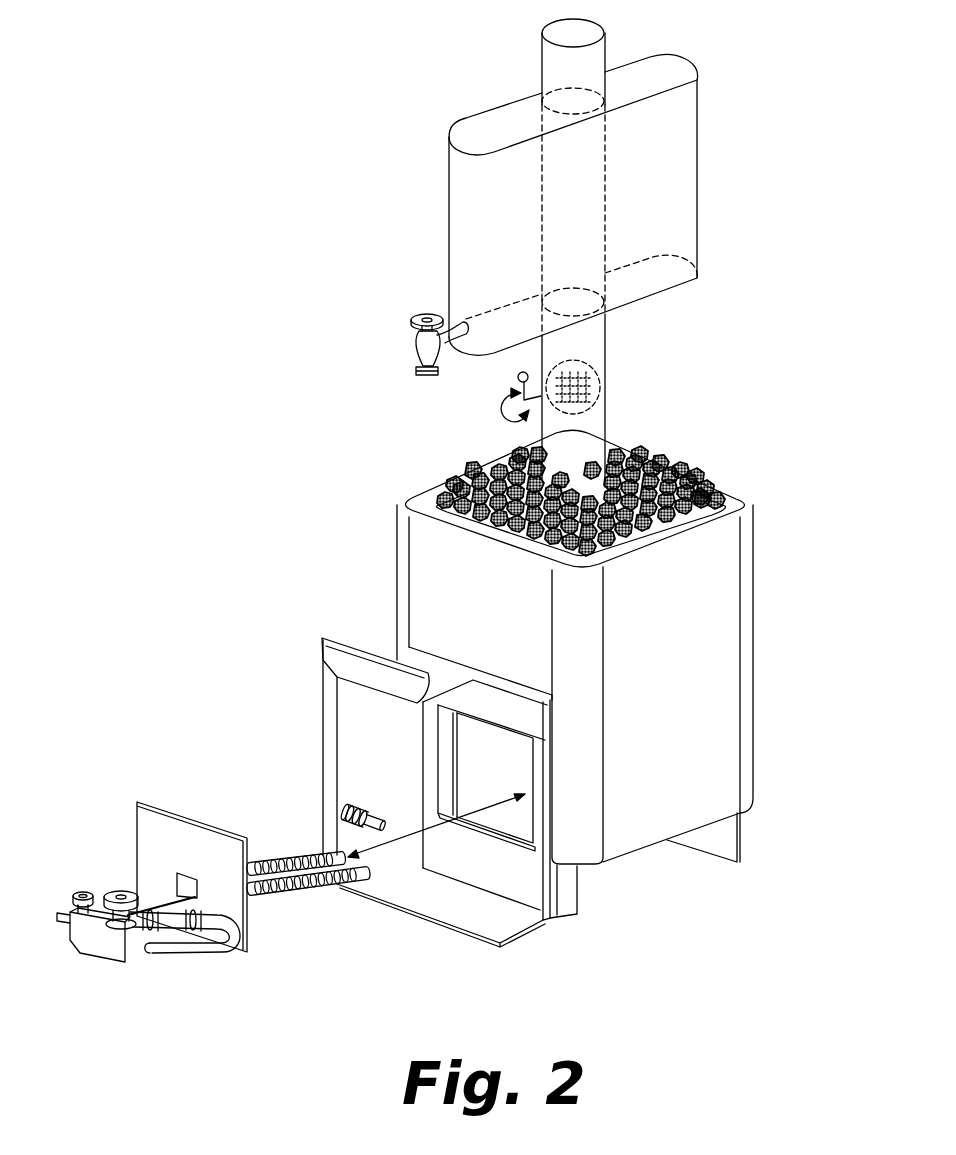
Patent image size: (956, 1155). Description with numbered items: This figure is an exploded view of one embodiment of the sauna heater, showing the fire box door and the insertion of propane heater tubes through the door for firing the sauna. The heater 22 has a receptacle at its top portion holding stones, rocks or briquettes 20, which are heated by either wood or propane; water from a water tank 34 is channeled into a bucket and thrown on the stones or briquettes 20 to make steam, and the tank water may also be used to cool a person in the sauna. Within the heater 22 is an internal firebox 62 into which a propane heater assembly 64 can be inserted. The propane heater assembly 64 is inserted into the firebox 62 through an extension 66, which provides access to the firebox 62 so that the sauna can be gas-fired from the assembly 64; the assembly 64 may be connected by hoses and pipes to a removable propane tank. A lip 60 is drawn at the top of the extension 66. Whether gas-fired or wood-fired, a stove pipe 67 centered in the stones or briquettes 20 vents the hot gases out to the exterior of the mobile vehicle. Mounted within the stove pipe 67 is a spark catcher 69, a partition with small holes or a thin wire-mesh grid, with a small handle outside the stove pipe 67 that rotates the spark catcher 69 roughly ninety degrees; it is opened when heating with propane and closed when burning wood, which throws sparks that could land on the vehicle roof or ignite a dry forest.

The stones, rocks or briquettes 20 is at (660, 483).
The heater 22 is at (758, 657).
The water tank 34 is at (683, 167).
The deflector lip 60 is at (392, 658).
The internal firebox 62 is at (517, 767).
The propane heater assembly 64 is at (306, 914).
The extension 66 is at (547, 743).
The stove pipe 67 is at (595, 425).
The spark catcher 69 is at (594, 386).